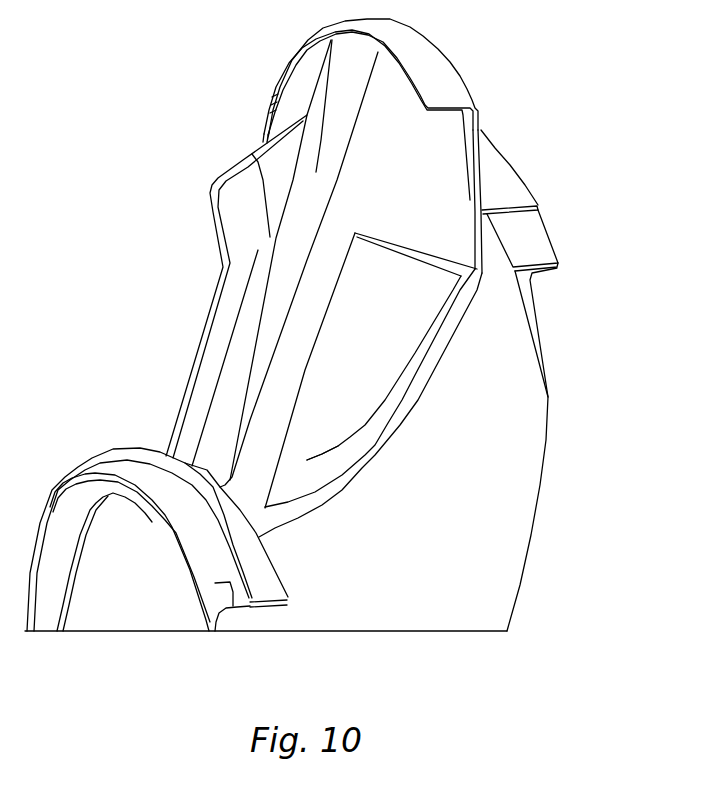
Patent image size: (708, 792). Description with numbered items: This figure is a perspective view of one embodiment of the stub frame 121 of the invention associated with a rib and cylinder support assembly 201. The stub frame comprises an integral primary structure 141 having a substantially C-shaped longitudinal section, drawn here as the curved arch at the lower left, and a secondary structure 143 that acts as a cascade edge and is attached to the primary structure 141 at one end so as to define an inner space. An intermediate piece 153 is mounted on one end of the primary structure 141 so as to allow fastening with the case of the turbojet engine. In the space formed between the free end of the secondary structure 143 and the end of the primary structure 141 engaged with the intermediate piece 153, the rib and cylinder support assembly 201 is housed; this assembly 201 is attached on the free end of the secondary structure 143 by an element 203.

The bracket assembly 121 is at (410, 263).
The primary structure 141 is at (157, 568).
The secondary structure 143 is at (332, 420).
The intermediate piece 153 is at (150, 590).
The rib and cylinder support assembly 201 is at (373, 479).
The element 203 is at (545, 172).